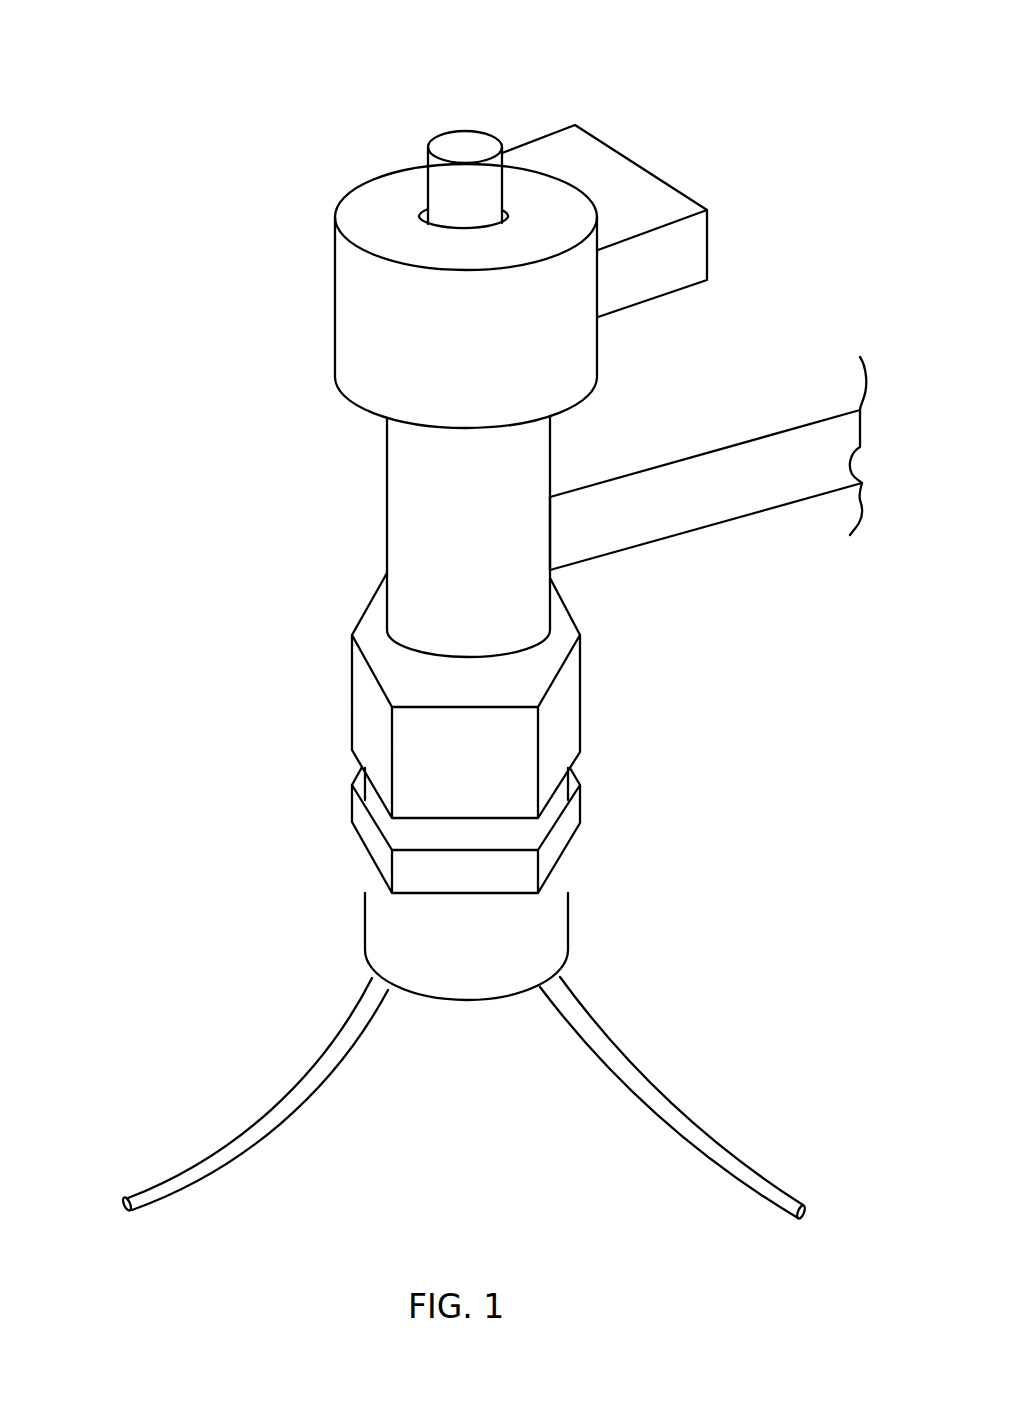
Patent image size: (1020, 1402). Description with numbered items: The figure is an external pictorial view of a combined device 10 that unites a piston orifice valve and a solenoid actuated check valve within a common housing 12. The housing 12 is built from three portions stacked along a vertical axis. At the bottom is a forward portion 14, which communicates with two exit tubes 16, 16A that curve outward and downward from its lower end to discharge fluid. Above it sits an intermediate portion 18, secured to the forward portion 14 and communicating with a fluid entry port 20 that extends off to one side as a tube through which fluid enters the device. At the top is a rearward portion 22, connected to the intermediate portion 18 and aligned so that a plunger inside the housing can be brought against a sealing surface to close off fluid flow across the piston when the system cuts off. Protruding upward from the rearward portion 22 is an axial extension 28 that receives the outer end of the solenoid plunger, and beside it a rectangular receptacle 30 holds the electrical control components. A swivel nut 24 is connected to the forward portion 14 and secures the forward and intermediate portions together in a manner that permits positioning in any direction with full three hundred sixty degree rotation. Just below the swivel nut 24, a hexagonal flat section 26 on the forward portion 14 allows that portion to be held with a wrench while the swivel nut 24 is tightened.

The combined device 10 is at (185, 617).
The housing 12 is at (543, 582).
The bottom, forward portion 14 is at (545, 926).
The exit tube 16 is at (245, 1140).
The exit tube 16A is at (693, 1157).
The intermediate portion 18 is at (535, 542).
The fluid entry port 20 is at (730, 467).
The rearward portion 22 is at (420, 397).
The swivel nut 24 is at (350, 718).
The hexagonal flat section 26 is at (370, 845).
The axial extension 28 is at (460, 185).
The rectangular receptacle 30 is at (627, 197).